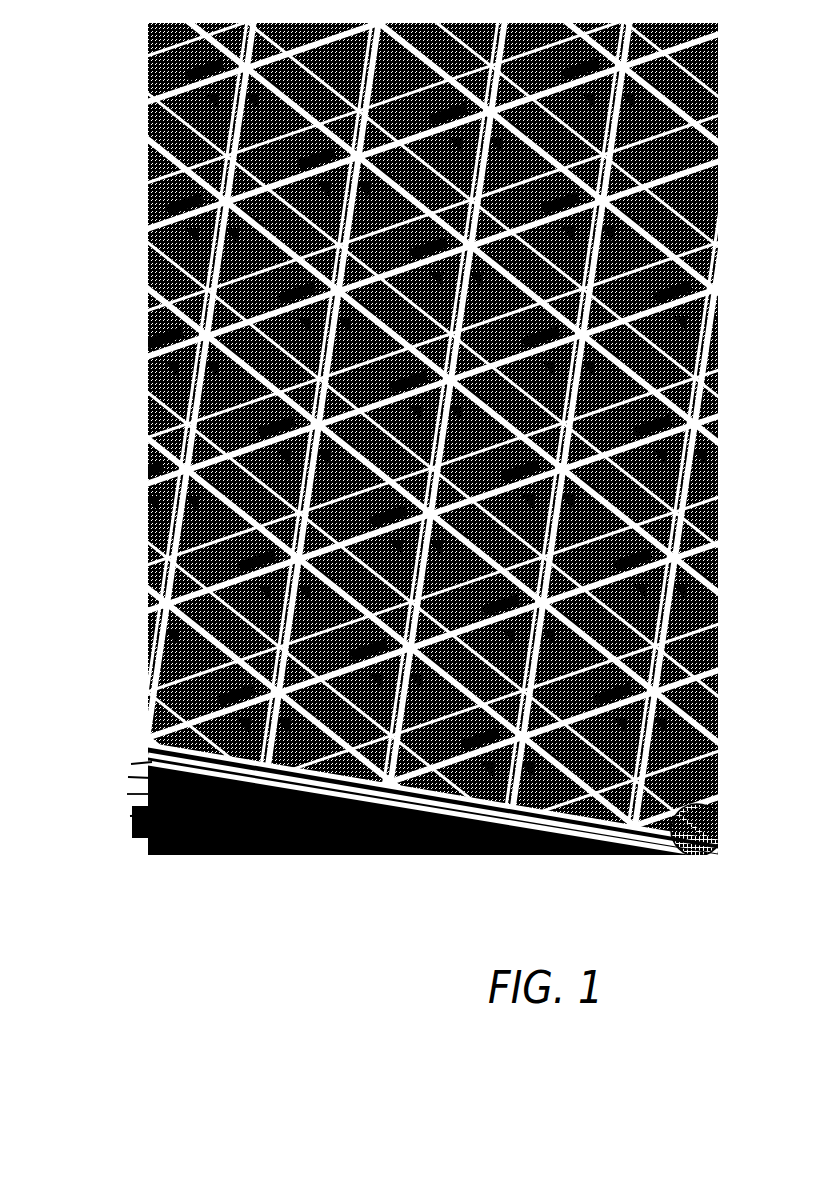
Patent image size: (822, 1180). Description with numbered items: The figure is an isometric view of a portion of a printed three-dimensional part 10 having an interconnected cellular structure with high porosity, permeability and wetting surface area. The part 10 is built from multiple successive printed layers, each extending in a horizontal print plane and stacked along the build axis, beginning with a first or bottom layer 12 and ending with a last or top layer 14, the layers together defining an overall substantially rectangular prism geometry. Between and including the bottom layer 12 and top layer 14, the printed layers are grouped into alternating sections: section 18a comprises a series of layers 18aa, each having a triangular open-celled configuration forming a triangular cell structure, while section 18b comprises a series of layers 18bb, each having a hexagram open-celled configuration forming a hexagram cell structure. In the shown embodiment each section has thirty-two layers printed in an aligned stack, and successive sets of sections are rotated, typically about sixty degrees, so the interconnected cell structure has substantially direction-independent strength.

The 3D part 10 is at (113, 519).
The bottom layer 12 is at (148, 845).
The top layer 14 is at (680, 683).
The section 18a is at (131, 764).
The section 18b is at (128, 777).
The layers 18aa is at (133, 832).
The layers 18bb is at (130, 816).